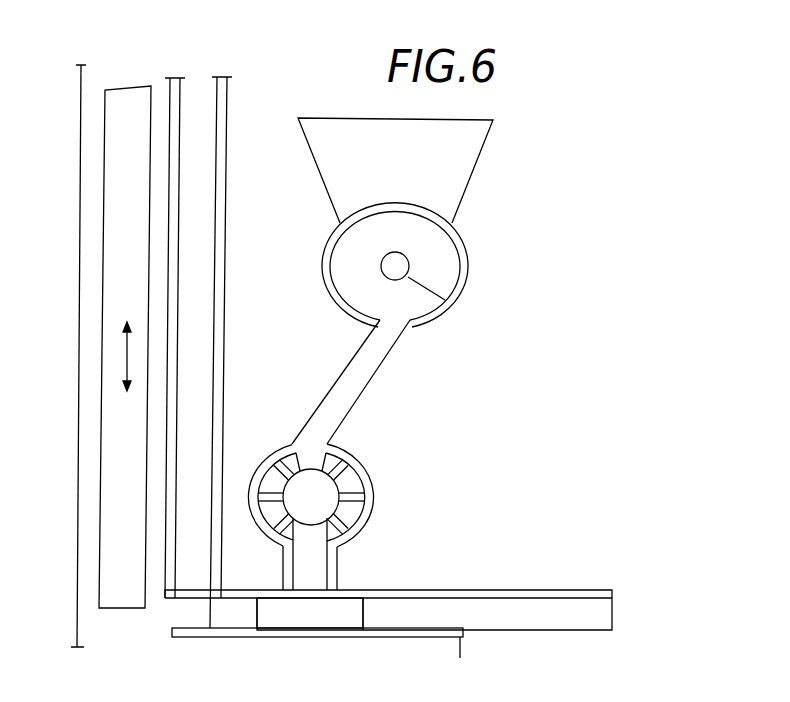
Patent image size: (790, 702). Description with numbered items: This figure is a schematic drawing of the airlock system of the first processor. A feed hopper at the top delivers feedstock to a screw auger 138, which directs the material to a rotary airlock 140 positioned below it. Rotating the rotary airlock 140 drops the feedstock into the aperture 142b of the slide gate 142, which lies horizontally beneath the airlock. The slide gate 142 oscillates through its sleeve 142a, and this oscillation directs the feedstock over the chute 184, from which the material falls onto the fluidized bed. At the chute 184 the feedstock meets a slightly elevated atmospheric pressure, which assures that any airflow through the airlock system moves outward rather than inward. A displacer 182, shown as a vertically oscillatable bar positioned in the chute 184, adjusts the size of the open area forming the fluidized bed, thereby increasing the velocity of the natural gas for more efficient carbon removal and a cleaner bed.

The screw auger 138 is at (452, 263).
The rotary airlock 140 is at (357, 463).
The slide gate 142 is at (571, 584).
The sleeve 142a is at (180, 630).
The aperture 142b is at (318, 622).
The displacer 182 is at (143, 462).
The chute 184 is at (160, 140).